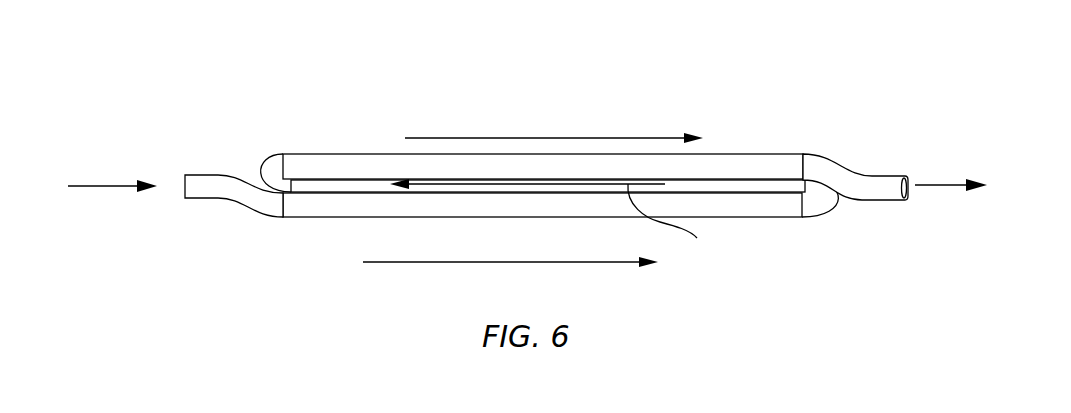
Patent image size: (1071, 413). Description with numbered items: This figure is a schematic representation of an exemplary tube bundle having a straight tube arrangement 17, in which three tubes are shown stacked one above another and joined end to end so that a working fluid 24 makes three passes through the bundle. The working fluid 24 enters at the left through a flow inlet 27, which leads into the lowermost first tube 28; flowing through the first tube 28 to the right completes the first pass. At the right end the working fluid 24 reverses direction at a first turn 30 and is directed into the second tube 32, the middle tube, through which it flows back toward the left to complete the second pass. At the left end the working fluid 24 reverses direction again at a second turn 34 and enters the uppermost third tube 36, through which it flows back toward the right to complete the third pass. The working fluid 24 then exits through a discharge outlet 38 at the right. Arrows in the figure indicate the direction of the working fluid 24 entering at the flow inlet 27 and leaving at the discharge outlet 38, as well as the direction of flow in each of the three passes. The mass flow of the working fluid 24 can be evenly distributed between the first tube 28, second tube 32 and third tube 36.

The straight tube arrangement 17 is at (597, 111).
The working fluid 24 is at (98, 184).
The flow inlet 27 is at (166, 200).
The first tube 28 is at (775, 218).
The first turn 30 is at (827, 210).
The second tube 32 is at (758, 187).
The second turn 34 is at (267, 165).
The third tube 36 is at (308, 153).
The discharge outlet 38 is at (892, 173).